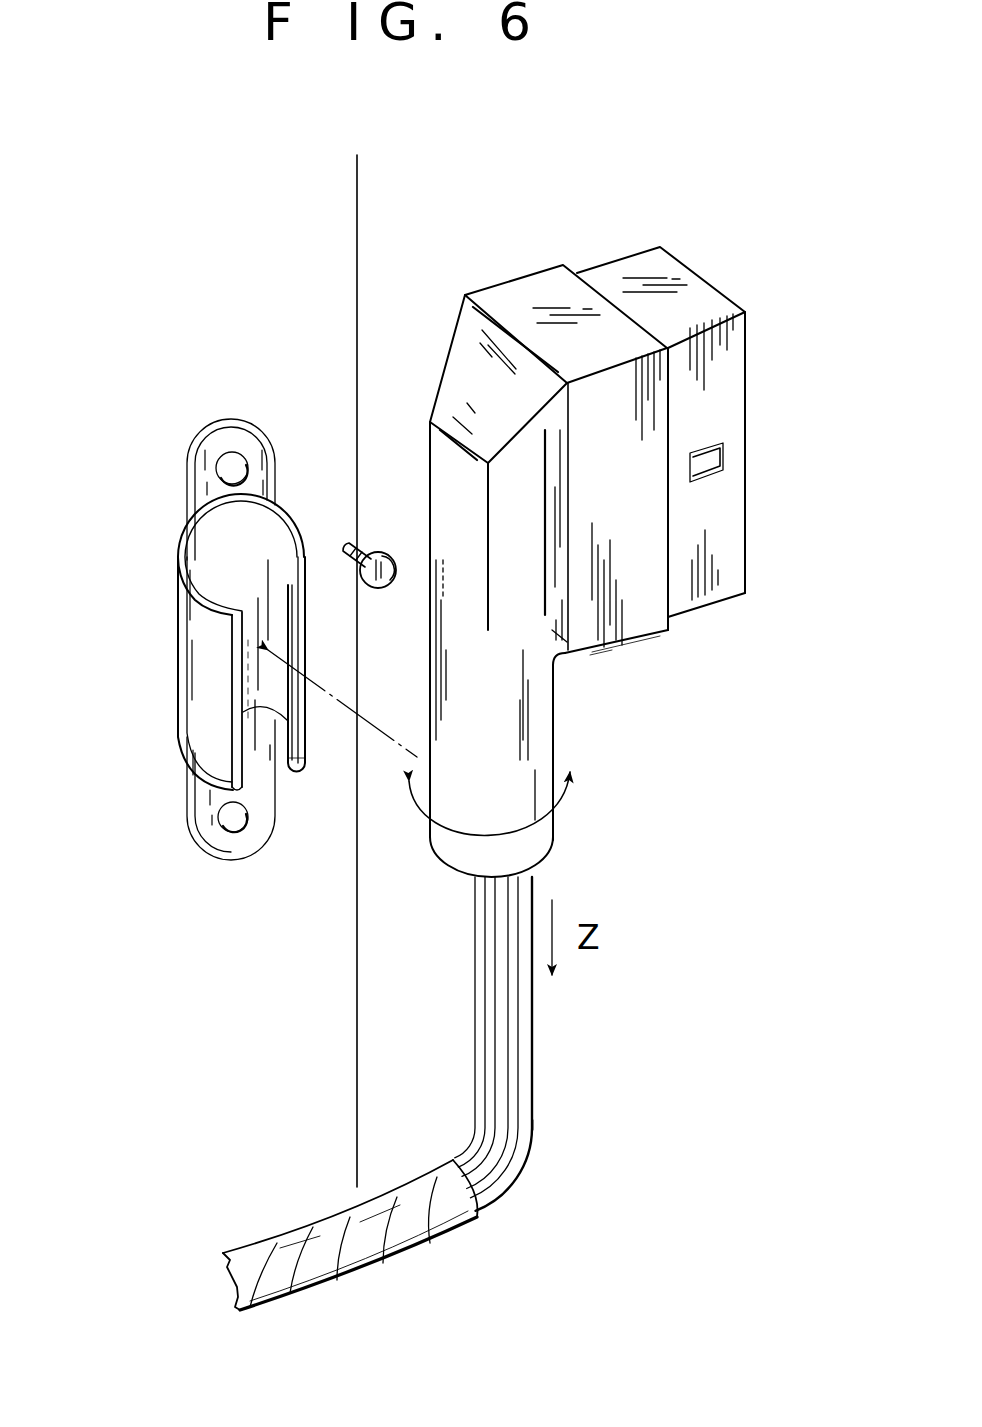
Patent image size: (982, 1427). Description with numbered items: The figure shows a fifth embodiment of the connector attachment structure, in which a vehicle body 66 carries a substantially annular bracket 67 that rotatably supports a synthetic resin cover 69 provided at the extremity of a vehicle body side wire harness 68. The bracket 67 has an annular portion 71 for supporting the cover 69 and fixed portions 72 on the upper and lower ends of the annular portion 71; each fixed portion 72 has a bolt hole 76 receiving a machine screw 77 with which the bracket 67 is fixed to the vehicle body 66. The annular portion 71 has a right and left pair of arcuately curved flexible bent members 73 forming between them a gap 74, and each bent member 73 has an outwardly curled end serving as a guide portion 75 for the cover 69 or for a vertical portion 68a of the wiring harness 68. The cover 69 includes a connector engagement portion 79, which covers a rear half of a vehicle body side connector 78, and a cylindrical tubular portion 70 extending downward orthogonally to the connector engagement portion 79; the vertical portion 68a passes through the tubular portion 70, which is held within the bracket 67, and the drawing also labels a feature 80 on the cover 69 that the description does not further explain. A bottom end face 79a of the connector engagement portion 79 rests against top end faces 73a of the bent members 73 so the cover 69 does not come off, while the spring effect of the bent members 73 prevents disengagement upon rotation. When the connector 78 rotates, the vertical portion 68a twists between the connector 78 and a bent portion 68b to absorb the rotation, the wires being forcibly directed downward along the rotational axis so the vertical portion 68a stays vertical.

The vehicle body 66 is at (338, 258).
The bracket 67 is at (206, 619).
The wire harness 68 is at (457, 1230).
The vertical portion 68a is at (536, 1023).
The bent portion 68b is at (510, 1133).
The cover 69 is at (426, 463).
The tubular portion 70 is at (525, 789).
The annular portion 71 is at (176, 654).
The fixed portions 72 is at (205, 457).
The bent members 73 is at (308, 633).
The top end faces 73a is at (301, 526).
The gap 74 is at (265, 622).
The guide portion 75 is at (290, 765).
The bolt hole 76 is at (238, 456).
The machine screw 77 is at (381, 559).
The vehicle body side connector 78 is at (748, 341).
The connector engagement portion 79 is at (647, 620).
The bottom end face 79a is at (607, 653).
The housing seam 80 is at (443, 570).